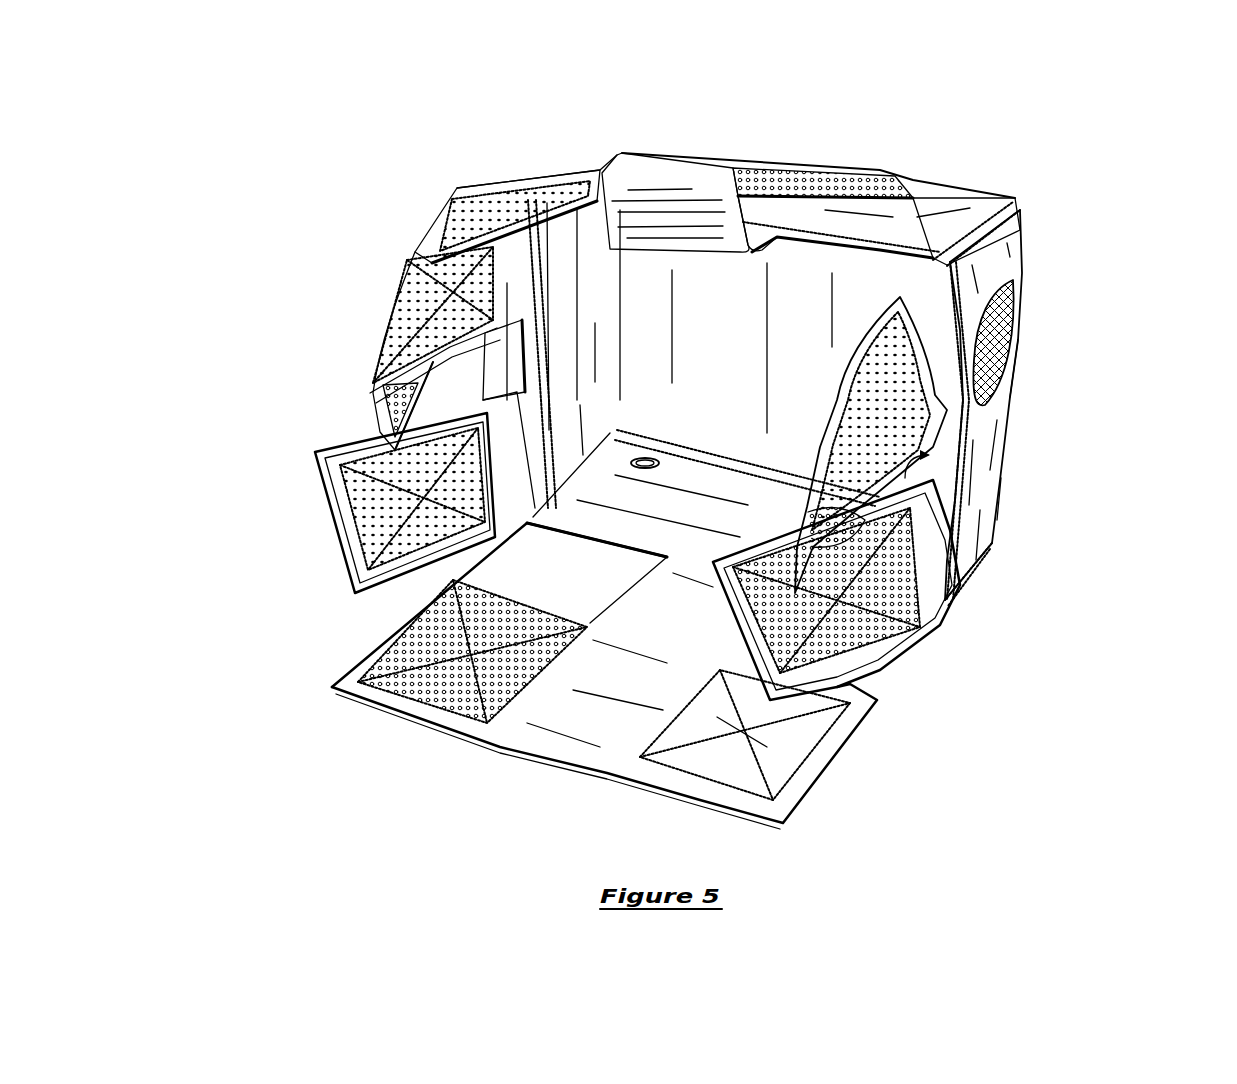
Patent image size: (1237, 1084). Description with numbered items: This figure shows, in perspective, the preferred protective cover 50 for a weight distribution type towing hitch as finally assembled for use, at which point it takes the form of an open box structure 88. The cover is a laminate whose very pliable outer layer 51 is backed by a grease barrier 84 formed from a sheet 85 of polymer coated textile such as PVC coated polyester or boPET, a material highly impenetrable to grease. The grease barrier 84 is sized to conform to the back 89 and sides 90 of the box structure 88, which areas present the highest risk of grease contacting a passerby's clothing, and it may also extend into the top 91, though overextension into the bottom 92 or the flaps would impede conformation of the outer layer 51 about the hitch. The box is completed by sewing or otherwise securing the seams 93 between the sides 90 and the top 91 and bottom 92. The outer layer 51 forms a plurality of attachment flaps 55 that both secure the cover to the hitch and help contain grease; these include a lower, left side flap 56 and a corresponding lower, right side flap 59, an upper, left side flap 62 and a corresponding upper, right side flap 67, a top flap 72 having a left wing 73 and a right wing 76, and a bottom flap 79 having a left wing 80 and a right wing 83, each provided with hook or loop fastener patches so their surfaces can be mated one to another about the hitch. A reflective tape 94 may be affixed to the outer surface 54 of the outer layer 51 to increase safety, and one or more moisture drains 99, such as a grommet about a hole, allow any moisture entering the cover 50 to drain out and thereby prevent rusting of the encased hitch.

The protective cover 50 is at (1130, 303).
The outer layer 51 is at (970, 207).
The outer surface 54 is at (997, 266).
The attachment flaps 55 is at (722, 143).
The lower, left side flap 56 is at (380, 495).
The lower, right side flap 59 is at (870, 663).
The upper, left side flap 62 is at (407, 305).
The upper, right side flap 67 is at (865, 383).
The top flap 72 is at (637, 190).
The left wing 73 is at (460, 202).
The right wing 76 is at (887, 173).
The bottom flap 79 is at (637, 617).
The left wing 80 is at (417, 680).
The right wing 83 is at (810, 740).
The grease barrier 84 is at (716, 417).
The sheet 85 is at (587, 260).
The open box structure 88 is at (1077, 423).
The back 89 is at (617, 341).
The sides 90 is at (588, 352).
The top 91 is at (850, 262).
The bottom 92 is at (712, 526).
The seams 93 is at (598, 168).
The reflective tape 94 is at (1002, 333).
The moisture drains 99 is at (659, 467).